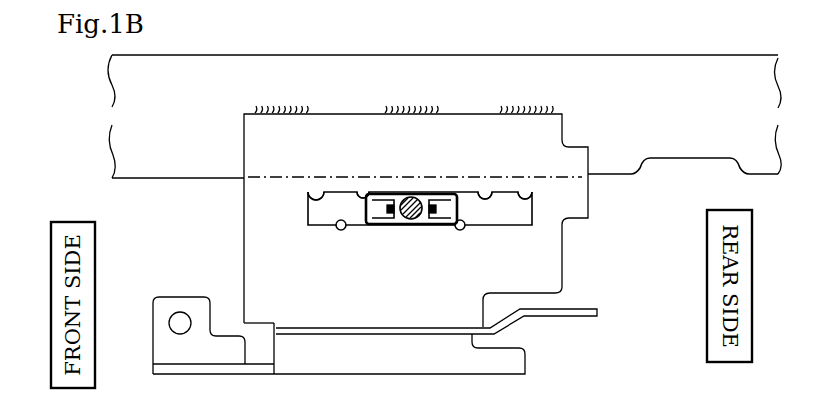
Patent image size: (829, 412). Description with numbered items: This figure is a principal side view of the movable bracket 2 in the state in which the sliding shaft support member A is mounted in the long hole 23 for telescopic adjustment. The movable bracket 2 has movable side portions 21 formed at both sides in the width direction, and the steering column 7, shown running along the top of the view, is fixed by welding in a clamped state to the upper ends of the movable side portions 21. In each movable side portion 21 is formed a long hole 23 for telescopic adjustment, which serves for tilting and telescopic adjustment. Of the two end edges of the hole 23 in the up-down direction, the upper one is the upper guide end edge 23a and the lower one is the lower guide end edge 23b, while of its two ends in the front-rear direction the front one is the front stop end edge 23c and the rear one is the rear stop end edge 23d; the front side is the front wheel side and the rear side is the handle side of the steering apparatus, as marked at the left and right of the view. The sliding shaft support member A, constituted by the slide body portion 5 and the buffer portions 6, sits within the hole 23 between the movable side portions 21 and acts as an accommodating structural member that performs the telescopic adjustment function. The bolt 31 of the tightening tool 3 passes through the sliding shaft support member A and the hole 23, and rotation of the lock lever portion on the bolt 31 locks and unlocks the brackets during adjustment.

The steering column 7 is at (355, 55).
The movable bracket 2 is at (563, 257).
The movable side portion 21 is at (244, 248).
The long hole for telescopic adjustment 23 is at (505, 213).
The upper guide end edge 23a is at (484, 192).
The lower guide end edge 23b is at (341, 228).
The front stop end edge 23c is at (315, 193).
The rear stop end edge 23d is at (524, 192).
The buffer portion 6 is at (362, 192).
The slide body portion 5 is at (433, 227).
The tightening tool 3 is at (409, 181).
The bolt 31 is at (411, 197).
The sliding shaft support member A is at (391, 227).